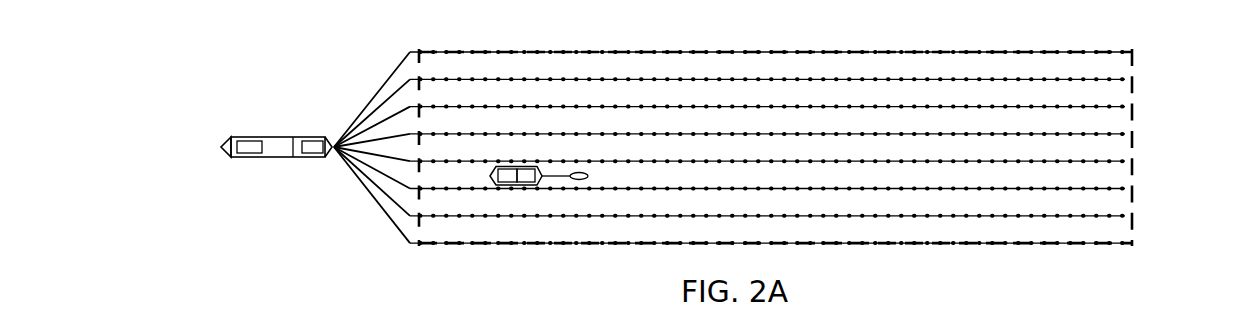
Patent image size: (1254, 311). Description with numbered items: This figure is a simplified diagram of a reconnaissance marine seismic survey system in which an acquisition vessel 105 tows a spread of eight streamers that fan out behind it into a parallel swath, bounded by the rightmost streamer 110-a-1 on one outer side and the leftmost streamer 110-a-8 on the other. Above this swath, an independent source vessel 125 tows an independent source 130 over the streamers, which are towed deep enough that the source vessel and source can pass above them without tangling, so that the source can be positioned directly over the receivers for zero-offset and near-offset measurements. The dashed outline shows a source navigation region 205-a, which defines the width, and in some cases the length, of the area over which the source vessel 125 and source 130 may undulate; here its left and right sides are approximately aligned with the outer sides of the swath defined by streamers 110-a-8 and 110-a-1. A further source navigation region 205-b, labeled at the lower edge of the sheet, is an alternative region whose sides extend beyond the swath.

The acquisition vessel 105 is at (253, 137).
The rightmost streamer 110-a-1 is at (1128, 80).
The leftmost streamer 110-a-8 is at (1102, 245).
The independent source vessel 125 is at (491, 176).
The independent source 130 is at (588, 176).
The source navigation region 205-a is at (1102, 52).
The source navigation region 205-b is at (1165, 304).